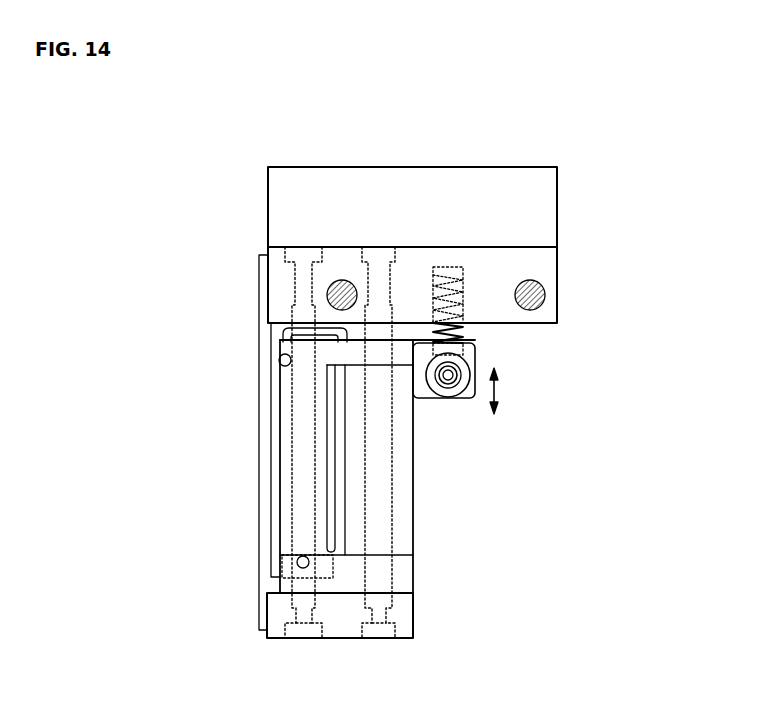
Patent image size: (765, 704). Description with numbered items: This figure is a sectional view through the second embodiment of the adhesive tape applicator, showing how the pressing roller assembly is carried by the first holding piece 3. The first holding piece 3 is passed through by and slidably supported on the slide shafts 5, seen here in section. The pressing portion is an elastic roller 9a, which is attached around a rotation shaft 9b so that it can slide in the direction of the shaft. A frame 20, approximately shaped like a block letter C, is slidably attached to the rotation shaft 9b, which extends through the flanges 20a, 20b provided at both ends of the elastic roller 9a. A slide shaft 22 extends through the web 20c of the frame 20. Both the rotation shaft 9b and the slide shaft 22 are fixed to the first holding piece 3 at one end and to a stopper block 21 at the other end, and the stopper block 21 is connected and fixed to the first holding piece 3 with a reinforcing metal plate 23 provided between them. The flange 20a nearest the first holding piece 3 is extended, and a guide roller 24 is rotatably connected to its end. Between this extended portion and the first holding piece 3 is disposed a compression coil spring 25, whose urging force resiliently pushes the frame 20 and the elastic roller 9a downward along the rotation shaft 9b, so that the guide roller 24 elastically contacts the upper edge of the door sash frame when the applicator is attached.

The first holding piece 3 is at (525, 167).
The slide shafts 5 is at (327, 292).
The elastic roller 9a is at (413, 473).
The rotation shaft 9b is at (407, 352).
The frame 20 is at (278, 482).
The flange 20a is at (418, 343).
The flange 20b is at (343, 583).
The web 20c is at (288, 435).
The stopper block 21 is at (413, 607).
The slide shaft 22 is at (290, 390).
The reinforcing metal plate 23 is at (258, 537).
The guide roller 24 is at (456, 398).
The compression coil spring 25 is at (440, 330).